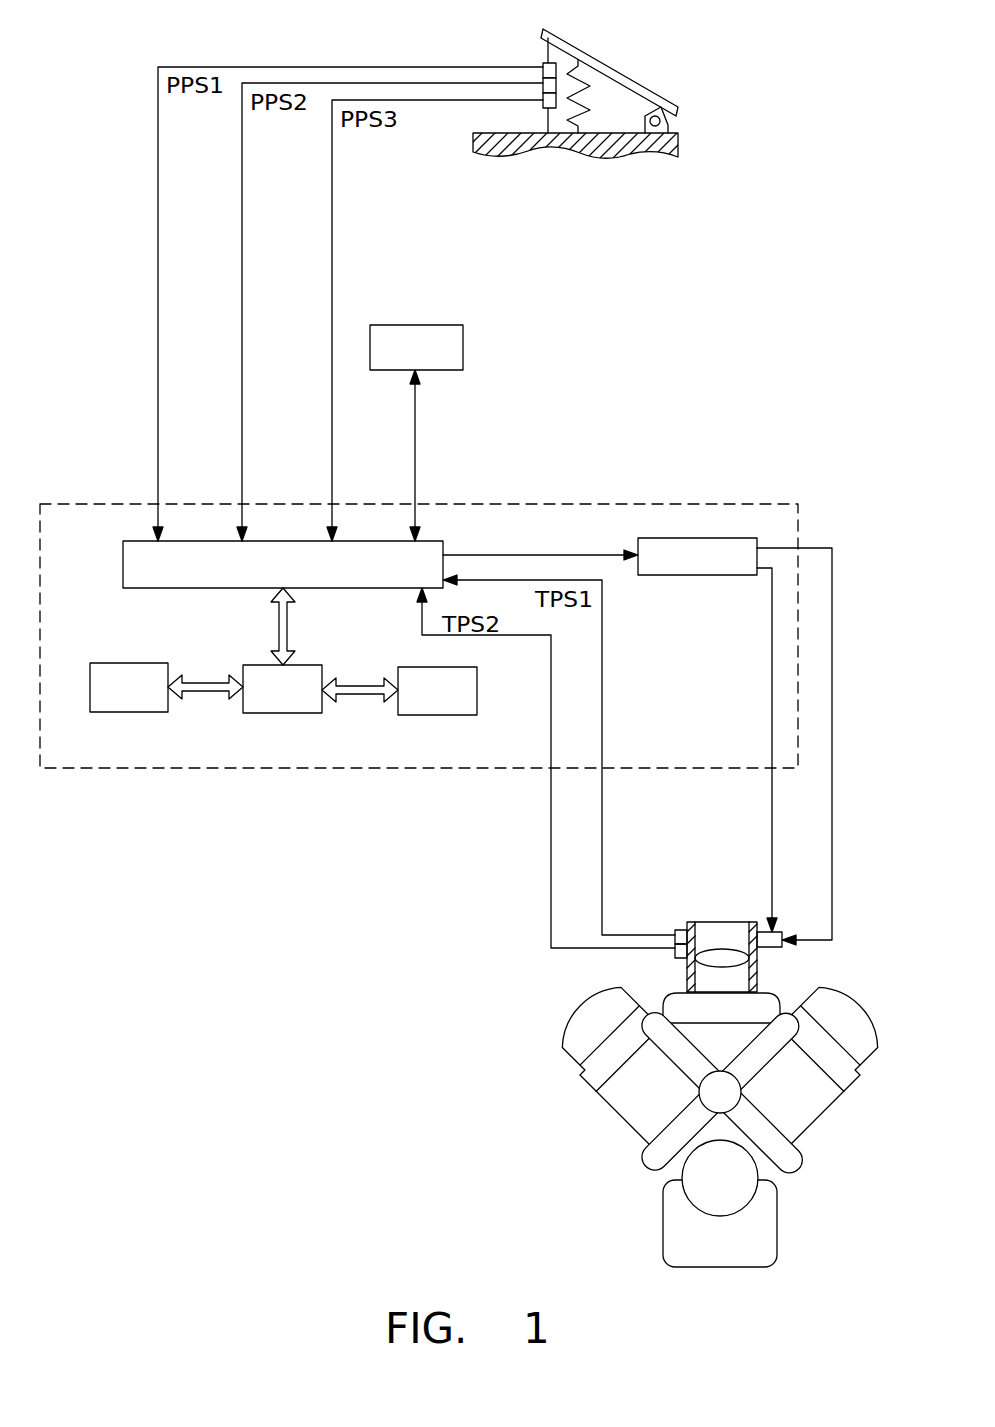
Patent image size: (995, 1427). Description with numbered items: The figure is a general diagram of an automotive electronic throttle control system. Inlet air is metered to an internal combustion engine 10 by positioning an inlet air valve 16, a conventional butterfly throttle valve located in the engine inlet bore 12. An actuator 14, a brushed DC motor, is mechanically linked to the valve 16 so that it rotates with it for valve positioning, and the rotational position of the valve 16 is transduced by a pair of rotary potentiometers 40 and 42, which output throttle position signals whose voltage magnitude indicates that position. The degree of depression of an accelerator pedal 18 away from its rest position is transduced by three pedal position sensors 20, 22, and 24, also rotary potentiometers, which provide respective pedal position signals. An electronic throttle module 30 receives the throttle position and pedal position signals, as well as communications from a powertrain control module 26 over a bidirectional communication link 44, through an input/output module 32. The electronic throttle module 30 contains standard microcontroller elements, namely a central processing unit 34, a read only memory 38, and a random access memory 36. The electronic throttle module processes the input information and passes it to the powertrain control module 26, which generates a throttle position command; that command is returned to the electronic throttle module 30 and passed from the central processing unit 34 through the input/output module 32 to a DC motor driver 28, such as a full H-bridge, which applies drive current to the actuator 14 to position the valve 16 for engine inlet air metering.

The internal combustion engine 10 is at (790, 1224).
The engine inlet bore 12 is at (690, 922).
The actuator 14 is at (784, 945).
The inlet air valve 16 is at (722, 957).
The accelerator pedal 18 is at (607, 68).
The pedal position sensor 20 is at (543, 70).
The pedal position sensor 22 is at (541, 86).
The pedal position sensor 24 is at (545, 108).
The powertrain control module 26 is at (460, 348).
The DC motor driver 28 is at (697, 575).
The electronic throttle module 30 is at (57, 490).
The input/output module 32 is at (140, 567).
The central processing unit 34 is at (289, 713).
The random access memory 36 is at (448, 715).
The read only memory 38 is at (142, 712).
The rotary potentiometer 40 is at (677, 932).
The rotary potentiometer 42 is at (678, 956).
The bidirectional communication link 44 is at (418, 462).